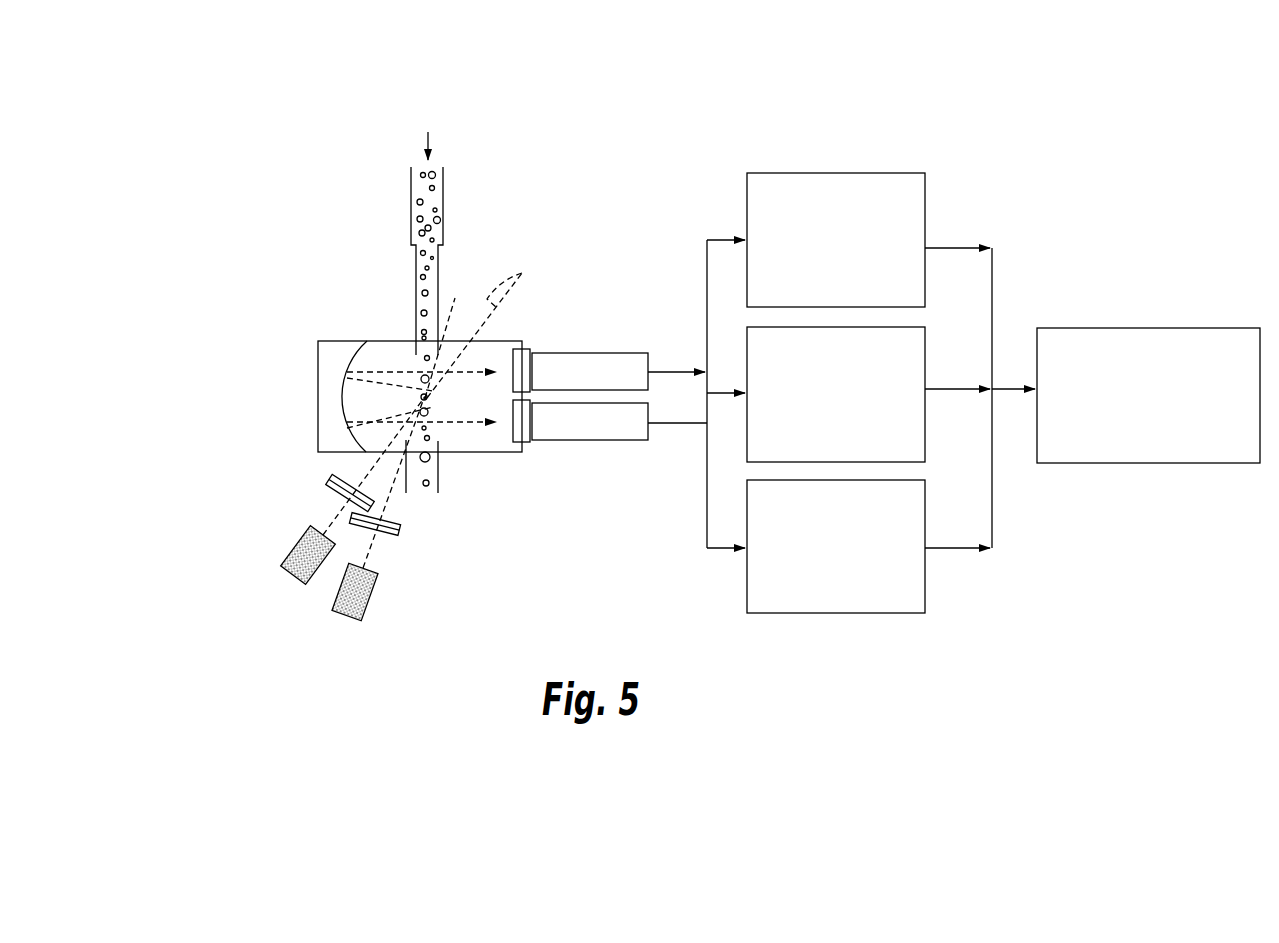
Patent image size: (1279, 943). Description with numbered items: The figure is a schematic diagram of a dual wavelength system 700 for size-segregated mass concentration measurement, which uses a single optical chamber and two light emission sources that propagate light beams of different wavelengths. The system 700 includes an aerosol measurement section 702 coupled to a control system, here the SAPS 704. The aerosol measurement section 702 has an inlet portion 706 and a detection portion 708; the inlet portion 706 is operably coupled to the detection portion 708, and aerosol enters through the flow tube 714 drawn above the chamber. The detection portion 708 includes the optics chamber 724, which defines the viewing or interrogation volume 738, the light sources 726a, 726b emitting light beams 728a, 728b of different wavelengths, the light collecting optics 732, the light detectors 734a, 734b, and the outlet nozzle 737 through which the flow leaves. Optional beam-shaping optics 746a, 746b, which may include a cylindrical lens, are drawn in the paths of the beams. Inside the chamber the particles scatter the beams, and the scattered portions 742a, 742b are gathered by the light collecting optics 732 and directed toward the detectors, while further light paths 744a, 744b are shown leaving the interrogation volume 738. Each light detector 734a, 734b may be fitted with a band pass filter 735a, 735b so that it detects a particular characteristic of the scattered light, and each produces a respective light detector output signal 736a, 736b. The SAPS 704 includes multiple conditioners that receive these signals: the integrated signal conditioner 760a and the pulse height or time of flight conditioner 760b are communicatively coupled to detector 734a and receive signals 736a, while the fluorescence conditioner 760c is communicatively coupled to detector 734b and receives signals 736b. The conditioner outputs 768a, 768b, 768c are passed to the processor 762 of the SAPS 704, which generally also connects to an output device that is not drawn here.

The dual wavelength system 700 is at (704, 116).
The aerosol measurement section 702 is at (643, 110).
The SAPS 704 is at (1258, 154).
The inlet portion 706 is at (278, 233).
The detection portion 708 is at (210, 390).
The flow tube 714 is at (445, 163).
The optics chamber 724 is at (352, 338).
The light source 726a is at (300, 549).
The light source 726b is at (370, 592).
The light beam 728a is at (367, 474).
The light beam 728b is at (388, 498).
The light collecting optics 732 is at (316, 365).
The light detector 734a is at (620, 352).
The light detector 734b is at (617, 442).
The band pass filter 735a is at (525, 356).
The band pass filter 735b is at (527, 443).
The light detector output signal 736a is at (663, 370).
The light detector output signal 736b is at (677, 424).
The outlet nozzle 737 is at (438, 478).
The interrogation volume 738 is at (439, 404).
The scattered portion 742a is at (374, 420).
The scattered portion 742b is at (398, 372).
The first scattered light beam 744a is at (488, 322).
The second scattered light beam 744b is at (455, 299).
The beam-shaping optics 746a is at (328, 485).
The beam-shaping optics 746b is at (400, 527).
The integrated signal conditioner 760a is at (859, 291).
The pulse height or time of flight conditioner 760b is at (859, 445).
The fluorescence conditioner 760c is at (859, 601).
The processor 762 is at (1163, 436).
The integrated signal conditioner output 768a is at (930, 247).
The pulse height conditioner output 768b is at (928, 392).
The fluorescence conditioner output 768c is at (928, 550).